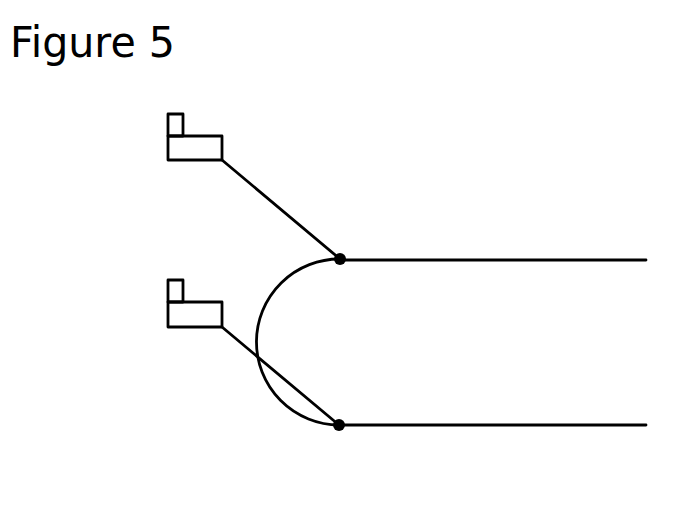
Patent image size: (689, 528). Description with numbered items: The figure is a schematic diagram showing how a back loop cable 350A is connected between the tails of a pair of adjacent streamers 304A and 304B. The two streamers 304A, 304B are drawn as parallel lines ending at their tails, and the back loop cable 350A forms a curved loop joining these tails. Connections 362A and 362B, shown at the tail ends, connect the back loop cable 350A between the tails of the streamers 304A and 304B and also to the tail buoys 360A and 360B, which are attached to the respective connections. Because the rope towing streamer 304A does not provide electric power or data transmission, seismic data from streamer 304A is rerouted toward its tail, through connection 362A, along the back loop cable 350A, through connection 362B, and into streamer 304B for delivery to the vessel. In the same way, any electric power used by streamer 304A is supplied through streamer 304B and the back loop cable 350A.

The back loop cable 350A is at (261, 380).
The tail buoy 360A is at (209, 136).
The tail buoy 360B is at (168, 305).
The connection 362A is at (340, 259).
The connection 362B is at (339, 425).
The streamer 304A is at (482, 260).
The streamer 304B is at (557, 425).